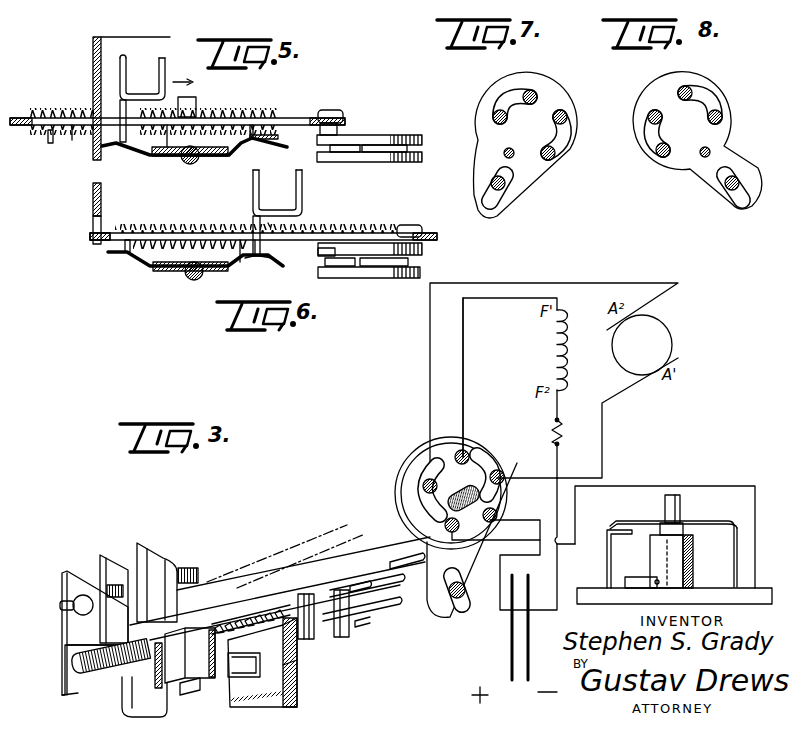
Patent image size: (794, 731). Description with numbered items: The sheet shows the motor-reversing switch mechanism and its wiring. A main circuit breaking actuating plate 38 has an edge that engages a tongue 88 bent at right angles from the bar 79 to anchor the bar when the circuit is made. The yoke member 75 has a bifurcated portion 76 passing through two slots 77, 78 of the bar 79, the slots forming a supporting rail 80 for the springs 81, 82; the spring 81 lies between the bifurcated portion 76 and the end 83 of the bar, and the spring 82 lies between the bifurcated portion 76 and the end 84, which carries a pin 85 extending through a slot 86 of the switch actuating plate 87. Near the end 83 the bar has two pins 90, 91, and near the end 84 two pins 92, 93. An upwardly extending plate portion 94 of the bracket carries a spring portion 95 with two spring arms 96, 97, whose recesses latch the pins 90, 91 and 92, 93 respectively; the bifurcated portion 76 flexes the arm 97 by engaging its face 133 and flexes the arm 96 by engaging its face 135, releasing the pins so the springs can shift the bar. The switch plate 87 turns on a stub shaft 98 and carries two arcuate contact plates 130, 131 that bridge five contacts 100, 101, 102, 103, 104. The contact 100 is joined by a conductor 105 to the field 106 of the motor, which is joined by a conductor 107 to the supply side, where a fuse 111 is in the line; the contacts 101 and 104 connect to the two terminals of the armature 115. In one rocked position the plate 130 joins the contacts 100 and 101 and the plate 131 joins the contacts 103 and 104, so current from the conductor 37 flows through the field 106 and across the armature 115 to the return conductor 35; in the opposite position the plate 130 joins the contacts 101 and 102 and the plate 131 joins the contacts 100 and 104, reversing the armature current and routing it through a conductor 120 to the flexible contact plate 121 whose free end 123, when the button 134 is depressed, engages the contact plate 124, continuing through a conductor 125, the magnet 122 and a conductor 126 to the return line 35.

In FIG. 3, the return conductor 35 is at (530, 628).
In FIG. 3, the conductor 37 is at (511, 660).
In FIG. 3, the main circuit breaking actuating plate 38 is at (240, 703).
In FIG. 5, the yoke member 75 is at (127, 70).
In FIG. 6, the yoke member 75 is at (264, 176).
In FIG. 3, the yoke member 75 is at (168, 556).
In FIG. 5, the bifurcated portion 76 is at (127, 106).
In FIG. 6, the bifurcated portion 76 is at (253, 218).
In FIG. 3, the bifurcated portion 76 is at (175, 634).
In FIG. 3, the slot 77 is at (222, 610).
In FIG. 3, the slot 78 is at (388, 617).
In FIG. 6, the bar 79 is at (92, 236).
In FIG. 3, the bar 79 is at (78, 697).
In FIG. 3, the supporting rail 80 is at (396, 602).
In FIG. 5, the spring 81 is at (72, 136).
In FIG. 3, the spring 81 is at (100, 685).
In FIG. 5, the spring 82 is at (226, 118).
In FIG. 3, the spring 82 is at (263, 608).
In FIG. 3, the end of bar 83 is at (74, 663).
In FIG. 3, the end of bar 84 is at (407, 554).
In FIG. 7, the pin 85 is at (491, 184).
In FIG. 8, the pin 85 is at (728, 190).
In FIG. 3, the pin 85 is at (466, 594).
In FIG. 7, the slot 86 is at (485, 196).
In FIG. 8, the slot 86 is at (728, 198).
In FIG. 3, the slot 86 is at (460, 608).
In FIG. 7, the switch actuating plate 87 is at (526, 145).
In FIG. 8, the switch actuating plate 87 is at (697, 140).
In FIG. 3, the switch actuating plate 87 is at (456, 527).
In FIG. 5, the tongue 88 is at (196, 103).
In FIG. 6, the tongue 88 is at (272, 226).
In FIG. 3, the tongue 88 is at (286, 694).
In FIG. 3, the pin 90 is at (128, 642).
In FIG. 5, the pin 91 is at (48, 137).
In FIG. 6, the pin 91 is at (125, 250).
In FIG. 3, the pin 91 is at (157, 680).
In FIG. 3, the pin 92 is at (372, 580).
In FIG. 5, the pin 93 is at (276, 136).
In FIG. 6, the pin 93 is at (318, 253).
In FIG. 3, the pin 93 is at (365, 628).
In FIG. 5, the plate portion 94 is at (166, 136).
In FIG. 6, the plate portion 94 is at (240, 262).
In FIG. 5, the spring portion 95 is at (195, 163).
In FIG. 6, the spring portion 95 is at (192, 280).
In FIG. 3, the spring portion 95 is at (290, 668).
In FIG. 5, the spring arm 96 is at (137, 152).
In FIG. 6, the spring arm 96 is at (140, 270).
In FIG. 3, the spring arm 96 is at (197, 685).
In FIG. 5, the spring arm 97 is at (238, 146).
In FIG. 6, the spring arm 97 is at (242, 268).
In FIG. 3, the spring arm 97 is at (330, 626).
In FIG. 3, the stub shaft 98 is at (482, 500).
In FIG. 7, the contact 100 is at (535, 92).
In FIG. 8, the contact 100 is at (690, 88).
In FIG. 3, the contact 100 is at (468, 452).
In FIG. 7, the contact 101 is at (493, 118).
In FIG. 8, the contact 101 is at (648, 118).
In FIG. 3, the contact 101 is at (424, 480).
In FIG. 7, the contact 102 is at (504, 153).
In FIG. 8, the contact 102 is at (660, 157).
In FIG. 3, the contact 102 is at (445, 524).
In FIG. 7, the contact 103 is at (556, 156).
In FIG. 8, the contact 103 is at (710, 150).
In FIG. 3, the contact 103 is at (507, 522).
In FIG. 7, the contact 104 is at (567, 115).
In FIG. 8, the contact 104 is at (722, 117).
In FIG. 3, the contact 104 is at (503, 474).
In FIG. 3, the conductor 105 is at (464, 316).
In FIG. 3, the field 106 is at (553, 360).
In FIG. 3, the conductor 107 is at (557, 412).
In FIG. 3, the fuse 111 is at (562, 432).
In FIG. 3, the armature 115 is at (672, 336).
In FIG. 3, the conductor 120 is at (697, 490).
In FIG. 3, the contact plate 121 is at (740, 553).
In FIG. 3, the magnet 122 is at (690, 553).
In FIG. 3, the free end 123 is at (618, 522).
In FIG. 3, the contact plate 124 is at (607, 568).
In FIG. 3, the conductor 125 is at (644, 577).
In FIG. 3, the conductor 126 is at (612, 605).
In FIG. 7, the arcuate contact plate 130 is at (510, 103).
In FIG. 8, the arcuate contact plate 130 is at (648, 140).
In FIG. 3, the arcuate contact plate 130 is at (420, 500).
In FIG. 7, the arcuate contact plate 131 is at (565, 140).
In FIG. 8, the arcuate contact plate 131 is at (705, 97).
In FIG. 3, the arcuate contact plate 131 is at (492, 456).
In FIG. 5, the face 133 is at (250, 140).
In FIG. 3, the button 134 is at (681, 503).
In FIG. 5, the face 135 is at (152, 156).
In FIG. 6, the face 135 is at (153, 263).